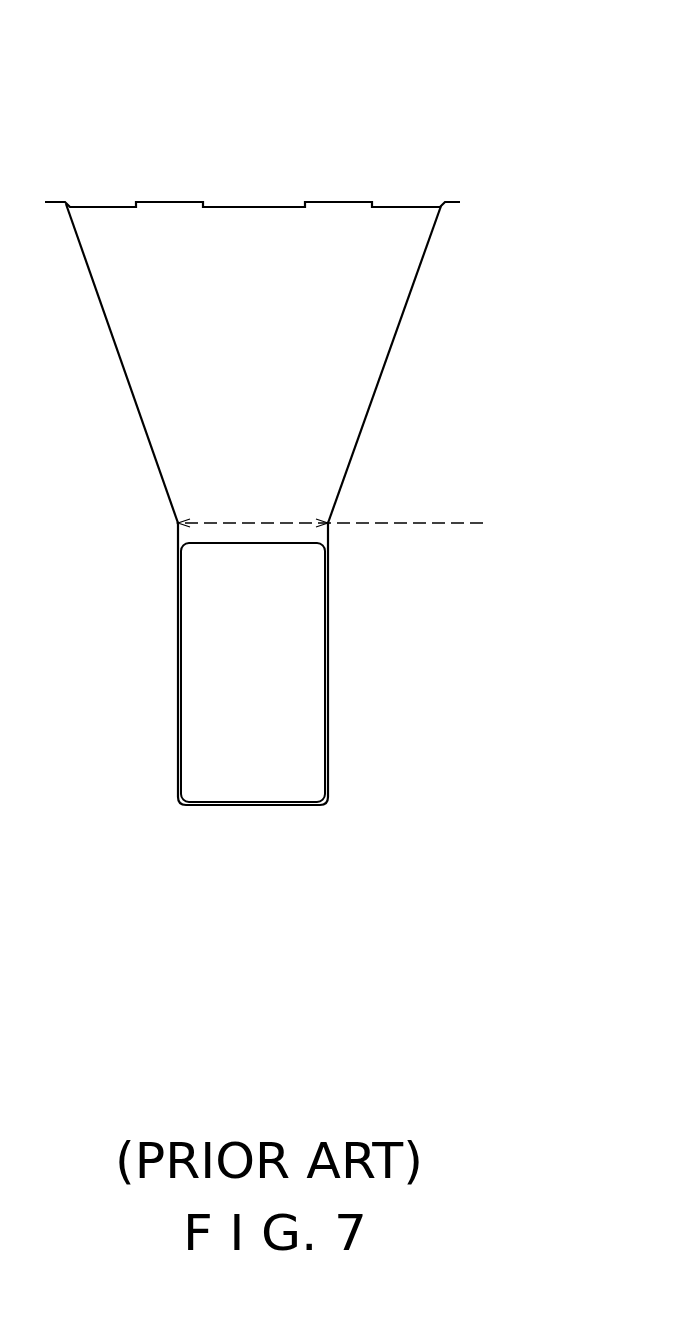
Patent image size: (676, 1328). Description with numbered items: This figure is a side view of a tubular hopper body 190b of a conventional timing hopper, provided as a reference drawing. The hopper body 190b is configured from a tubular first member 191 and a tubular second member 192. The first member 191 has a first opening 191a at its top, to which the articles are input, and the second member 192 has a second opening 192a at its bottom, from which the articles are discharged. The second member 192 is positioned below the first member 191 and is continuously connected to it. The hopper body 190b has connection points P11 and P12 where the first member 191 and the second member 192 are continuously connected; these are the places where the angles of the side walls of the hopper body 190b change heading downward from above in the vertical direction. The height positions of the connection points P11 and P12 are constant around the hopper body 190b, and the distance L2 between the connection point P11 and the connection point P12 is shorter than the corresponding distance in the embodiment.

The hopper body 190b is at (296, 451).
The first member 191 is at (300, 317).
The first opening 191a is at (268, 204).
The second member 192 is at (367, 712).
The second opening 192a is at (247, 780).
The distance L2 is at (331, 507).
The connection point P11 is at (177, 525).
The connection point P12 is at (330, 525).